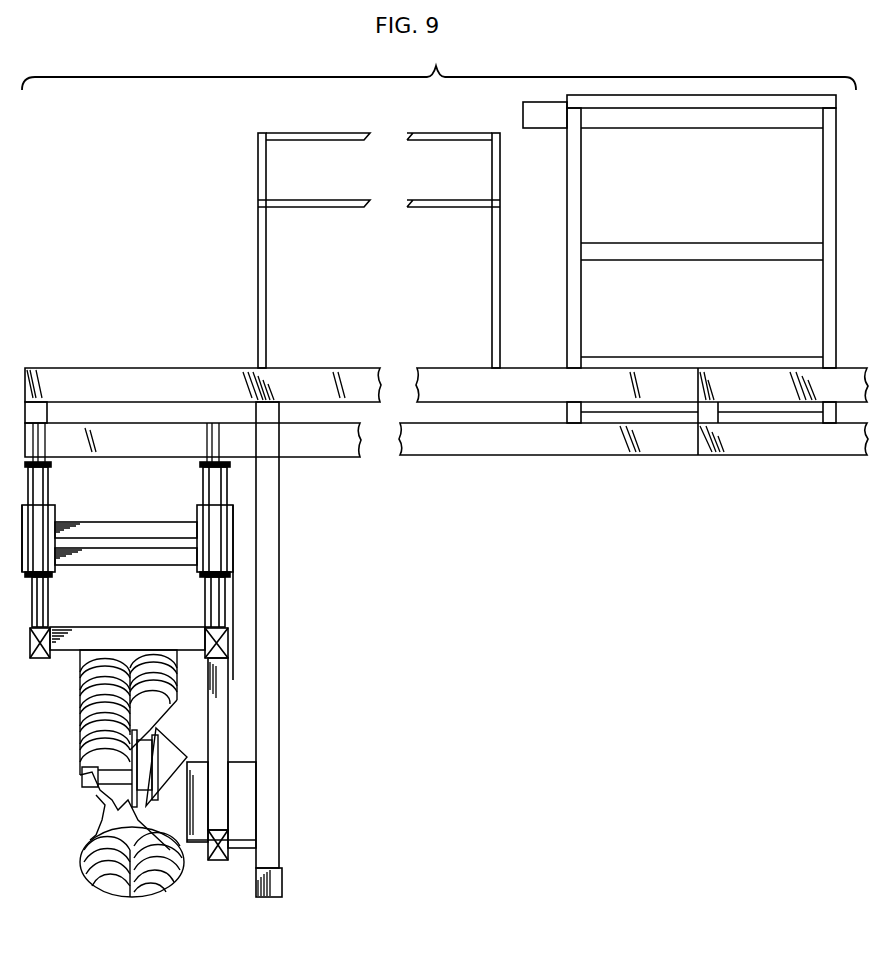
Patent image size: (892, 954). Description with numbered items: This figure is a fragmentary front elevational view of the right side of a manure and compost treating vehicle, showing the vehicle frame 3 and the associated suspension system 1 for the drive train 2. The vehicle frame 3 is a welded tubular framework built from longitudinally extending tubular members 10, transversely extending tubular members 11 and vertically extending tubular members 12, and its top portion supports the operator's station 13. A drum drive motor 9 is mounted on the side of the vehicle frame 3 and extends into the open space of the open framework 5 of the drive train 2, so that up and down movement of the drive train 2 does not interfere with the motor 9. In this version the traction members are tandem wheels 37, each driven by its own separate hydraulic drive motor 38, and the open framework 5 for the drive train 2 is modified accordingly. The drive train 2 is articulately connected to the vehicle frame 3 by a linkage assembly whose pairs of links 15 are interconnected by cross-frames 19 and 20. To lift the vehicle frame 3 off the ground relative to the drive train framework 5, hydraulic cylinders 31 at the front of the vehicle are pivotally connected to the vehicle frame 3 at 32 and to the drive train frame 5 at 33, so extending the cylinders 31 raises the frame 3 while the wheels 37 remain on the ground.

The suspension system 1 is at (244, 511).
The drive train 2 is at (107, 626).
The vehicle frame 3 is at (143, 324).
The open framework 5 is at (34, 659).
The drum drive motor 9 is at (243, 807).
The longitudinally extending tubular member 10 is at (277, 888).
The transversely extending tubular member 11 is at (345, 397).
The vertically extending tubular member 12 is at (267, 663).
The operator's station 13 is at (561, 193).
The pair of links 15 is at (27, 512).
The cross-frame 19 is at (100, 533).
The cross-frame 20 is at (167, 560).
The hydraulic cylinder 31 is at (38, 478).
The pivotal connection 32 is at (46, 443).
The pivotal connection 33 is at (43, 590).
The tandem wheel 37 is at (152, 896).
The hydraulic drive motor 38 is at (110, 782).